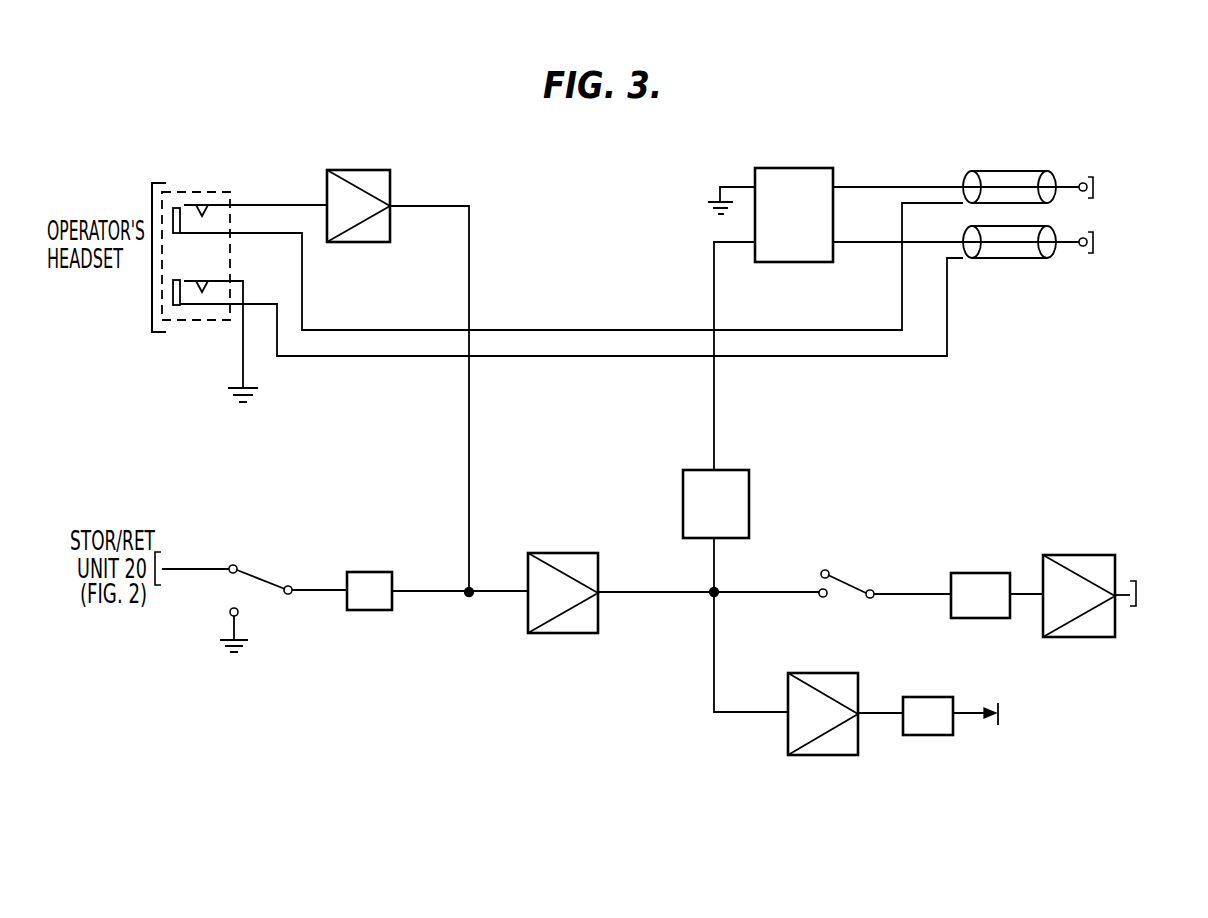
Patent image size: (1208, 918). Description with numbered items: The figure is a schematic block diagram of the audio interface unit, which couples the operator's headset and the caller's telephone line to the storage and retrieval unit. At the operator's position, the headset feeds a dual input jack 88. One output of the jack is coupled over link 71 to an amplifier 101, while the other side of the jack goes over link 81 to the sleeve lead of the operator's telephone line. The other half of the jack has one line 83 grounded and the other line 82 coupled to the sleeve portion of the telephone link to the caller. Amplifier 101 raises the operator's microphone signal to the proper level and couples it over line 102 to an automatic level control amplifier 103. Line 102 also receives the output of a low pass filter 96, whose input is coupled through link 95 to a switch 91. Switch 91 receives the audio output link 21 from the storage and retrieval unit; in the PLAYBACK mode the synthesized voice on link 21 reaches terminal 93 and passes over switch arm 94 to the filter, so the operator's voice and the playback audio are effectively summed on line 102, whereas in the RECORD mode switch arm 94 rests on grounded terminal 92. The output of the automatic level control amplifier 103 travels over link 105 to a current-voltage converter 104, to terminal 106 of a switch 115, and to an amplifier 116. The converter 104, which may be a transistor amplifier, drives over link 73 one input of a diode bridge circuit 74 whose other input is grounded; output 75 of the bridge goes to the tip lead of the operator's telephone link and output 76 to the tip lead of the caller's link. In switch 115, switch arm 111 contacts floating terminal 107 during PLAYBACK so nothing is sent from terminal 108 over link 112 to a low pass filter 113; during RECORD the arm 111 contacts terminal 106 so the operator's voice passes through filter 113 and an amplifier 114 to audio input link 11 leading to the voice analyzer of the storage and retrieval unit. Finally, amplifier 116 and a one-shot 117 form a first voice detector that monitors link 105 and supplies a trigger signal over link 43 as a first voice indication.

The dual input jack 88 is at (231, 191).
The line 83 is at (213, 282).
The link 71 is at (297, 205).
The amplifier 101 is at (375, 170).
The line 102 is at (470, 485).
The diode bridge circuit 74 is at (797, 168).
The link 73 is at (716, 443).
The output 75 is at (873, 187).
The output 76 is at (882, 243).
The link 81 is at (993, 171).
The line 82 is at (990, 258).
The audio output link 21 is at (185, 568).
The terminal 93 is at (240, 562).
The switch arm 94 is at (260, 580).
The switch 91 is at (245, 595).
The terminal 92 is at (230, 616).
The link 95 is at (312, 592).
The low pass filter 96 is at (368, 572).
The automatic level control amplifier 103 is at (572, 553).
The current-voltage converter 104 is at (750, 508).
The terminal 107 is at (826, 569).
The terminal 106 is at (823, 598).
The switch arm 111 is at (846, 584).
The switch 115 is at (838, 589).
The terminal 108 is at (873, 589).
The link 112 is at (908, 596).
The low pass filter 113 is at (985, 573).
The amplifier 114 is at (1080, 555).
The audio input link 11 is at (1122, 597).
The link 105 is at (755, 713).
The amplifier 116 is at (796, 673).
The one-shot 117 is at (921, 697).
The link 43 is at (968, 716).